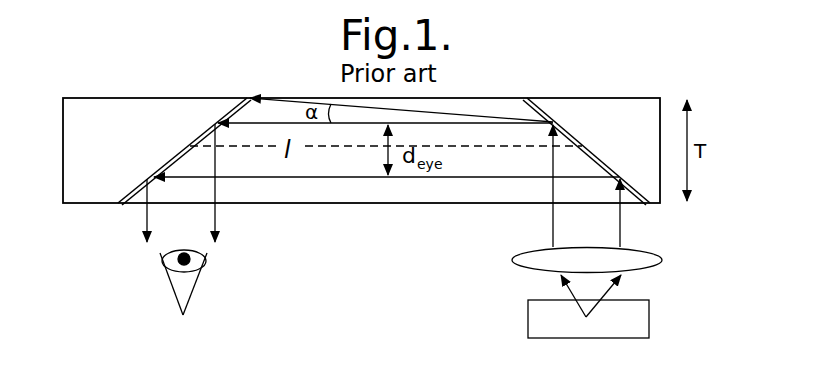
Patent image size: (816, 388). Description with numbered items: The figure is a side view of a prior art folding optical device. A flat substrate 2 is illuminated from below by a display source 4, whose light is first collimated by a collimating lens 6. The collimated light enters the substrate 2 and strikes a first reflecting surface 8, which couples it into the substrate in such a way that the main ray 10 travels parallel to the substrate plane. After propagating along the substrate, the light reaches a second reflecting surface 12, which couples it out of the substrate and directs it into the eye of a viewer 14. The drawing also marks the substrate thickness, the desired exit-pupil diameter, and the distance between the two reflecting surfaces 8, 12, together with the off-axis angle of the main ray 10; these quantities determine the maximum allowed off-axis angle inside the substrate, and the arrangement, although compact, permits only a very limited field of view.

The substrate 2 is at (579, 116).
The second reflecting surface 12 is at (168, 160).
The first reflecting surface 8 is at (600, 160).
The main ray 10 is at (495, 124).
The eye of a viewer 14 is at (205, 282).
The collimating lens 6 is at (648, 268).
The display source 4 is at (620, 328).